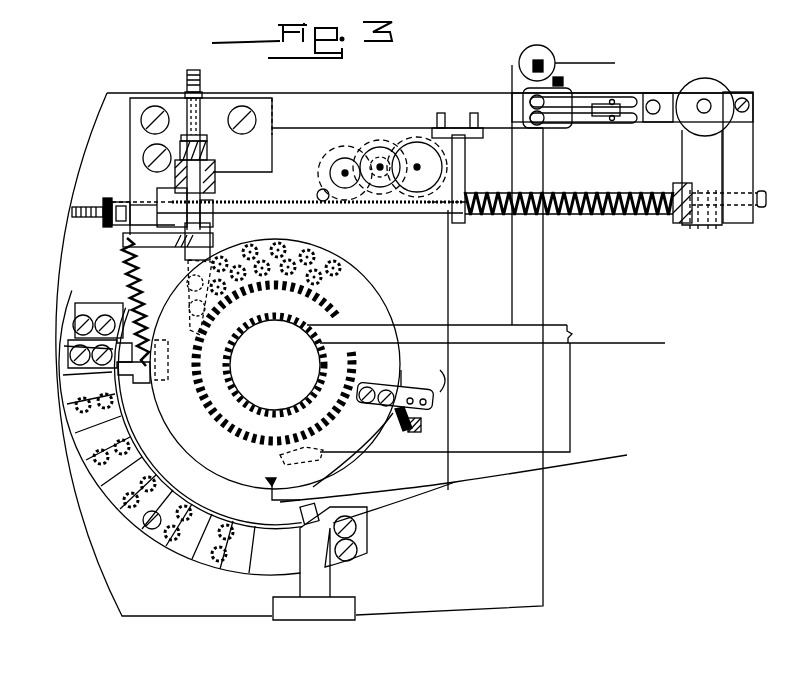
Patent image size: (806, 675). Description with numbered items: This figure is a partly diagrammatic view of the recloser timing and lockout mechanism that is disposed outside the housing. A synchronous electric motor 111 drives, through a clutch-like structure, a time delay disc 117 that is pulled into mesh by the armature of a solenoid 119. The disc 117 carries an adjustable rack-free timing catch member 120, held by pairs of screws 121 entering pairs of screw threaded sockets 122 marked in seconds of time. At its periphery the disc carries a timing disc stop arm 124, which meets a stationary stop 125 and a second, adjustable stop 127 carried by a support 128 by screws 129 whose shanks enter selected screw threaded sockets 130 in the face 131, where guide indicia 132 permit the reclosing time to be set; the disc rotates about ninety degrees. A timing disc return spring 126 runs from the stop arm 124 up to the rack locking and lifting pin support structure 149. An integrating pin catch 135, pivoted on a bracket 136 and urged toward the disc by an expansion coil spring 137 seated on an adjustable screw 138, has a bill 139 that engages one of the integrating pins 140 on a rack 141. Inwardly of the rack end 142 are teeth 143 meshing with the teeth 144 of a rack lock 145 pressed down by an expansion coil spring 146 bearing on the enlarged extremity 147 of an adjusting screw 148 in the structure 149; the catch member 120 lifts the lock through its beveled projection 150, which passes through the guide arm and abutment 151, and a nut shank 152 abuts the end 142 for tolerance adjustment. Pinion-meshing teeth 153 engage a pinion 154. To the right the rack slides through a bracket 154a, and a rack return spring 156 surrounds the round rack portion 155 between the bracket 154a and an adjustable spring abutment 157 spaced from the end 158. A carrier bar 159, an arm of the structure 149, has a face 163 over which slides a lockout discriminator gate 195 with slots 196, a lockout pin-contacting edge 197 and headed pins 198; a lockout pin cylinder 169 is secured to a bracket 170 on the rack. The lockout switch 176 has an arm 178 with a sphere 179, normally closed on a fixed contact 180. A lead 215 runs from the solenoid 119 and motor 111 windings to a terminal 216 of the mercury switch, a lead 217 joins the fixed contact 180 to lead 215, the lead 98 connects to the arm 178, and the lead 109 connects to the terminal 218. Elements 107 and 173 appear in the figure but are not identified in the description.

The lead 98 is at (615, 63).
The base plate 107 is at (622, 343).
The lead 109 is at (608, 455).
The synchronous electric motor 111 is at (340, 302).
The time delay disc 117 is at (368, 312).
The solenoid 119 is at (274, 326).
The rack-free timing catch member 120 is at (190, 268).
The screws 121 is at (190, 292).
The screw threaded sockets 122 is at (305, 252).
The timing disc stop arm 124 is at (135, 382).
The stationary stop 125 is at (365, 513).
The timing disc return spring 126 is at (125, 278).
The adjustable stop 127 is at (78, 340).
The support 128 is at (80, 388).
The screws 129 is at (70, 362).
The screw threaded sockets 130 is at (85, 410).
The face 131 is at (70, 440).
The guide indicia 132 is at (112, 470).
The integrating pin catch 135 is at (428, 410).
The bracket 136 is at (430, 398).
The expansion coil spring 137 is at (400, 432).
The adjustable screw 138 is at (425, 428).
The bill 139 is at (432, 383).
The integrating pins 140 is at (356, 198).
The rack 141 is at (438, 192).
The end of the rack 142 is at (128, 220).
The teeth 143 is at (235, 200).
The teeth of the rack lock 144 is at (214, 170).
The rack lock 145 is at (212, 153).
The expansion coil spring 146 is at (206, 140).
The enlarged extremity 147 is at (198, 135).
The adjusting screw 148 is at (185, 77).
The rack locking and lifting pin support structure 149 is at (132, 177).
The projection 150 is at (192, 262).
The guide arm and abutment 151 is at (212, 240).
The shank 152 is at (70, 212).
The pinion-meshing teeth 153 is at (406, 196).
The pinion 154 is at (324, 186).
The bracket 154a is at (455, 172).
The rack portion 155 is at (446, 205).
The rack return spring 156 is at (572, 215).
The adjustable spring abutment 157 is at (675, 185).
The end of the rack portion 158 is at (762, 208).
The carrier bar 159 is at (370, 100).
The face 163 is at (660, 118).
The lockout pin cylinder 169 is at (727, 90).
The bracket 170 is at (716, 158).
The pivot pin 173 is at (710, 100).
The lockout switch 176 is at (570, 52).
The arm 178 is at (547, 48).
The sphere 179 is at (530, 60).
The fixed contact 180 is at (512, 65).
The lockout discriminator gate 195 is at (620, 95).
The slots 196 is at (620, 124).
The lockout pin-contacting edge 197 is at (655, 98).
The headed pins 198 is at (545, 125).
The lead 215 is at (572, 425).
The terminal 216 is at (322, 455).
The lead 217 is at (512, 278).
The terminal 218 is at (266, 483).